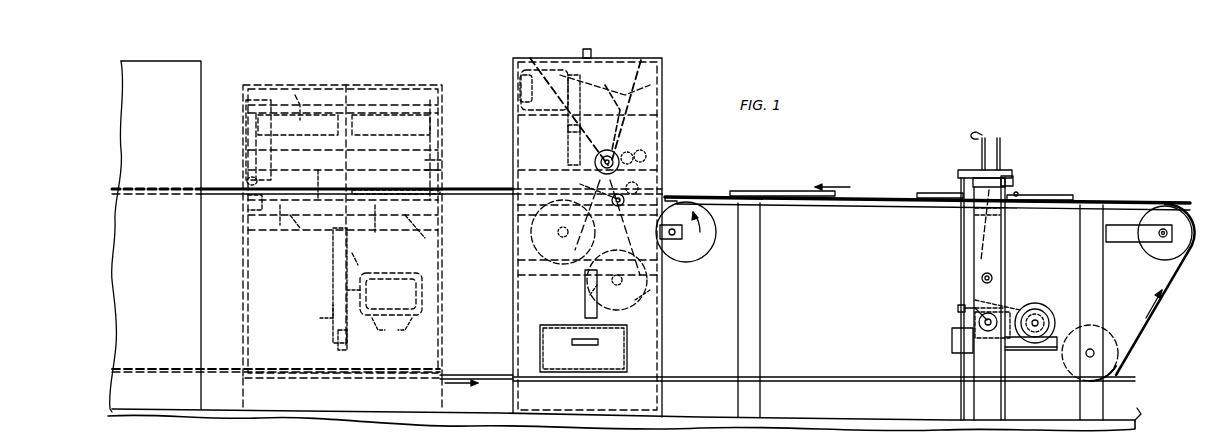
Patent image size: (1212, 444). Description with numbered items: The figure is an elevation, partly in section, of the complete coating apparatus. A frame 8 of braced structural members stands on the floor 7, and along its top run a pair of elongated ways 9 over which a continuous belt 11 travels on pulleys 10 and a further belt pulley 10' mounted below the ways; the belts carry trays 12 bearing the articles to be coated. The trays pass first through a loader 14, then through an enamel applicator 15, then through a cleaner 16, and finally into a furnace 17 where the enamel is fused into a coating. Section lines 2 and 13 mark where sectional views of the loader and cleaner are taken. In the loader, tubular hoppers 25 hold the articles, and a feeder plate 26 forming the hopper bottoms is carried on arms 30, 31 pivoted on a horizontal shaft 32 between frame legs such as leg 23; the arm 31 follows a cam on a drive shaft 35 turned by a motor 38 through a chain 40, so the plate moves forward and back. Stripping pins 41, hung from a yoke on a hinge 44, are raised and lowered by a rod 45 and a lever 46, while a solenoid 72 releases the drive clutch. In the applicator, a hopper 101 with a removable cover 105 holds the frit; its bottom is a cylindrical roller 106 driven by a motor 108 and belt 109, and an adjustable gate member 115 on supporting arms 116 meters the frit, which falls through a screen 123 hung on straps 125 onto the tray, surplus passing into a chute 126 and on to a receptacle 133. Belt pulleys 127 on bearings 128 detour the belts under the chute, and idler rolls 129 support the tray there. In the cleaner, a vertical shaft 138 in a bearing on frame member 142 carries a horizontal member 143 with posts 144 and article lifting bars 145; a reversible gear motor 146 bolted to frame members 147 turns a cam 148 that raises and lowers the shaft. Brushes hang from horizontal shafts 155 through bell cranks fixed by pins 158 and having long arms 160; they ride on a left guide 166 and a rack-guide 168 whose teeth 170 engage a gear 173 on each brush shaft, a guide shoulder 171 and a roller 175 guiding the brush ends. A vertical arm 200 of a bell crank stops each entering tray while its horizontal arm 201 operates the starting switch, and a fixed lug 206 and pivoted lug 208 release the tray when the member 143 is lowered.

The floor 7 is at (1113, 420).
The frame 8 is at (760, 295).
The ways 9 is at (490, 198).
The pulleys 10 is at (924, 275).
The roller 10' is at (590, 280).
The continuous belt 11 is at (1165, 278).
The trays 12 is at (366, 181).
The section line 13 is at (248, 40).
The loader 14 is at (1003, 152).
The enamel applicator 15 is at (662, 140).
The cleaner 16 is at (368, 84).
The furnace 17 is at (204, 60).
The section line 2 is at (950, 113).
The column 23 is at (1005, 250).
The tubular hoppers 25 is at (974, 125).
The feeder plate 26 is at (1018, 194).
The arm 30 is at (1010, 234).
The arm 31 is at (1000, 297).
The horizontal shaft 32 is at (981, 278).
The drive shaft 35 is at (975, 322).
The motor 38 is at (1036, 308).
The chain 40 is at (1026, 345).
The article stripping pins 41 is at (958, 176).
The hinge 44 is at (1015, 183).
The rod 45 is at (961, 243).
The lever 46 is at (958, 309).
The right solenoid 72 is at (952, 338).
The hopper 101 is at (650, 86).
The removable cover 105 is at (610, 60).
The cylindrical roller 106 is at (625, 180).
The motor 108 is at (520, 82).
The belt 109 is at (566, 150).
The adjustable gate member 115 is at (604, 117).
The supporting arm 116 is at (650, 155).
The screen 123 is at (645, 188).
The straps 125 is at (580, 186).
The chute 126 is at (590, 296).
The belt pulleys 127 is at (650, 298).
The bearings 128 is at (573, 294).
The idler rolls 129 is at (577, 229).
The receptacle 133 is at (610, 362).
The vertical shaft 138 is at (333, 255).
The frame member 142 is at (322, 318).
The horizontal member 143 is at (412, 238).
The cylindrical posts 144 is at (378, 228).
The article lifting bar 145 is at (318, 180).
The reversible gear motor 146 is at (422, 310).
The members 147 is at (390, 333).
The cam 148 is at (355, 268).
The rotatable horizontal shaft 155 is at (300, 92).
The pin 158 is at (310, 160).
The long arm 160 is at (262, 138).
The left guide 166 is at (246, 170).
The rack-guide 168 is at (442, 162).
The teeth 170 is at (420, 178).
The guide shoulder 171 is at (445, 176).
The gear 173 is at (445, 186).
The roller 175 is at (246, 182).
The vertical arm 200 is at (250, 200).
The horizontal arm 201 is at (278, 225).
The fixed lug 206 is at (296, 228).
The pivoted lug 208 is at (263, 257).